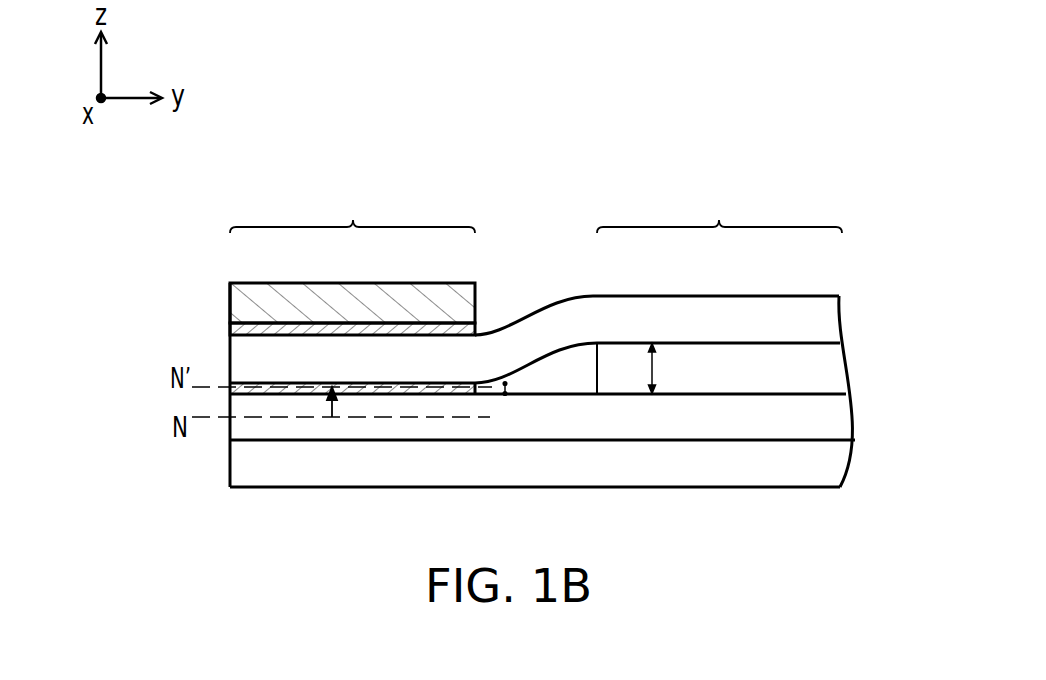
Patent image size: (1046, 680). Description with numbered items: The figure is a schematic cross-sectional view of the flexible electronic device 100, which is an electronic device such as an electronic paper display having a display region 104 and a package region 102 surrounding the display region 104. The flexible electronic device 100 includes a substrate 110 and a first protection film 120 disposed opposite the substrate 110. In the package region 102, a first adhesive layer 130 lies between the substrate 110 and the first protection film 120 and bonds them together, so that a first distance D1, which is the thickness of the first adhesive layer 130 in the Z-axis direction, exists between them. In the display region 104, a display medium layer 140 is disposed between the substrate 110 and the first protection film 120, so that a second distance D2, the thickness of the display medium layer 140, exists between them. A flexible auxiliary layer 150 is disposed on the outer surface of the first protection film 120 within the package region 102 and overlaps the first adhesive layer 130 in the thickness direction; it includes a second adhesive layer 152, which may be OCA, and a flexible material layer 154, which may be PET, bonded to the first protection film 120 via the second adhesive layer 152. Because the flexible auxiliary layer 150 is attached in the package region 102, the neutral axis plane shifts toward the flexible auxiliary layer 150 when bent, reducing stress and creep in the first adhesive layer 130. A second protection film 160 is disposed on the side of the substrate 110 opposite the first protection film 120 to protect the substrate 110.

The flexible electronic device 100 is at (888, 572).
The package region 102 is at (352, 208).
The display region 104 is at (719, 208).
The substrate 110 is at (822, 422).
The first protection film 120 is at (812, 308).
The first adhesive layer 130 is at (260, 391).
The display medium layer 140 is at (812, 367).
The flexible auxiliary layer 150 is at (138, 283).
The second adhesive layer 152 is at (238, 329).
The flexible material layer 154 is at (250, 305).
The second protection film 160 is at (818, 467).
The first distance D1 is at (508, 384).
The second distance D2 is at (670, 369).